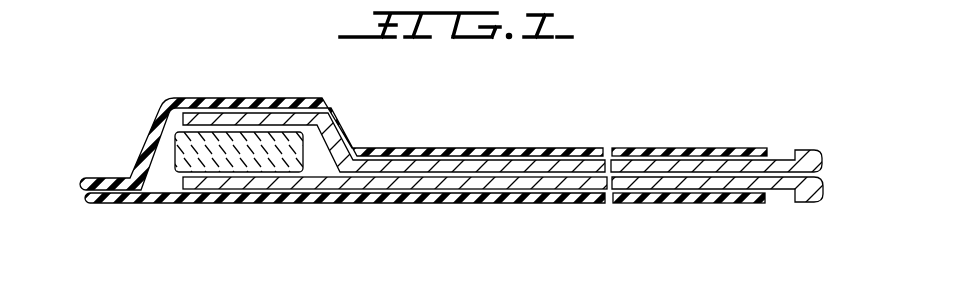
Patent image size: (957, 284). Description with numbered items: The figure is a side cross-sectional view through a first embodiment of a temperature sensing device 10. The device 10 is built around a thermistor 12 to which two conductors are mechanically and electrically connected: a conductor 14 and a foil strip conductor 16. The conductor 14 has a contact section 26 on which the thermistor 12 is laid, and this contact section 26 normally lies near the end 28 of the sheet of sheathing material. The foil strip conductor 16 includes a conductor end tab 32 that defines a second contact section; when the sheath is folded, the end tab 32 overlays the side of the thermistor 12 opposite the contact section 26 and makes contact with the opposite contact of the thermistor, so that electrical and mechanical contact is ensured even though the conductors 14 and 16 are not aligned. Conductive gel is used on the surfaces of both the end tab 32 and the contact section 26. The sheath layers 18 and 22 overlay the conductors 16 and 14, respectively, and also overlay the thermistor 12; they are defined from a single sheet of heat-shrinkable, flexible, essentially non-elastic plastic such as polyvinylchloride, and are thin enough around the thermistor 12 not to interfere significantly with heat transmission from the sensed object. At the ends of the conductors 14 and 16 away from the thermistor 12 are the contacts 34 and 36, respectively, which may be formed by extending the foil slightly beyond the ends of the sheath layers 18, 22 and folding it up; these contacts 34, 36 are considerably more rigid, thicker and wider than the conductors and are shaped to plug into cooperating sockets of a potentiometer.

The temperature sensing device 10 is at (142, 103).
The thermistor 12 is at (172, 143).
The conductor 14 is at (253, 182).
The foil strip conductor 16 is at (253, 113).
The sheath layer 18 is at (235, 100).
The sheath layer 22 is at (173, 200).
The contact section 26 is at (233, 176).
The end of the sheet 28 is at (85, 187).
The conductor end tab 32 is at (218, 125).
The contact 34 is at (823, 197).
The contact 36 is at (822, 155).